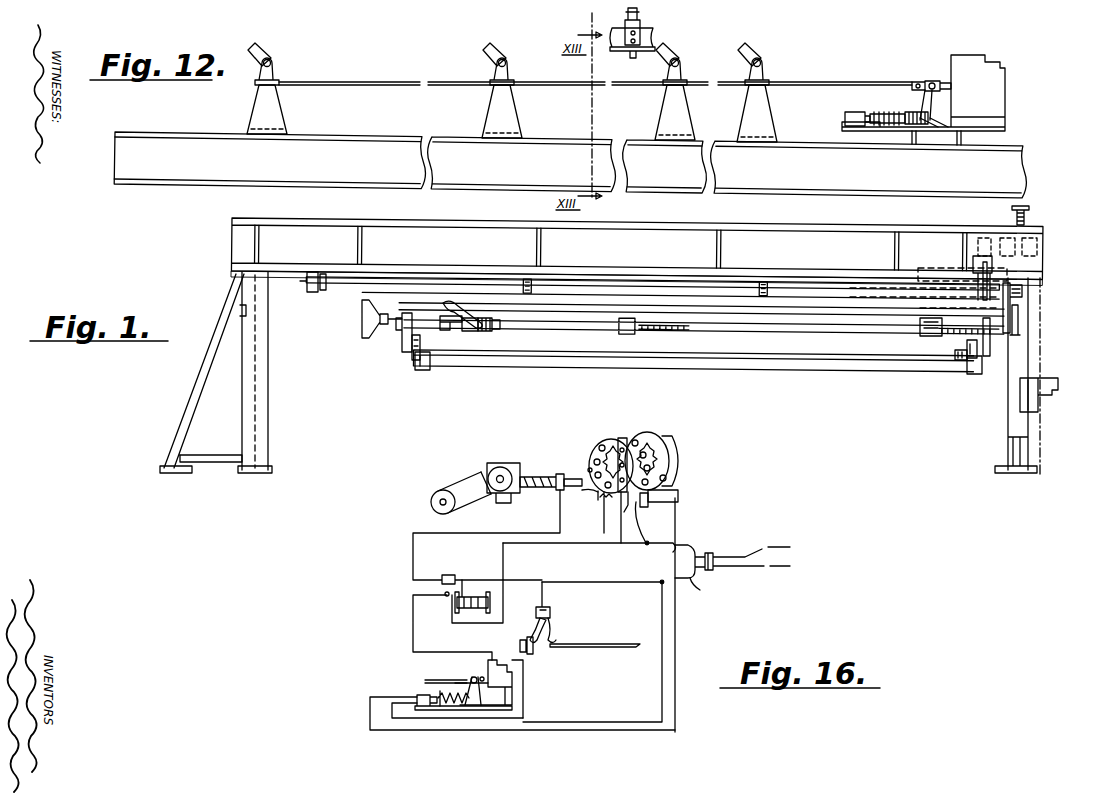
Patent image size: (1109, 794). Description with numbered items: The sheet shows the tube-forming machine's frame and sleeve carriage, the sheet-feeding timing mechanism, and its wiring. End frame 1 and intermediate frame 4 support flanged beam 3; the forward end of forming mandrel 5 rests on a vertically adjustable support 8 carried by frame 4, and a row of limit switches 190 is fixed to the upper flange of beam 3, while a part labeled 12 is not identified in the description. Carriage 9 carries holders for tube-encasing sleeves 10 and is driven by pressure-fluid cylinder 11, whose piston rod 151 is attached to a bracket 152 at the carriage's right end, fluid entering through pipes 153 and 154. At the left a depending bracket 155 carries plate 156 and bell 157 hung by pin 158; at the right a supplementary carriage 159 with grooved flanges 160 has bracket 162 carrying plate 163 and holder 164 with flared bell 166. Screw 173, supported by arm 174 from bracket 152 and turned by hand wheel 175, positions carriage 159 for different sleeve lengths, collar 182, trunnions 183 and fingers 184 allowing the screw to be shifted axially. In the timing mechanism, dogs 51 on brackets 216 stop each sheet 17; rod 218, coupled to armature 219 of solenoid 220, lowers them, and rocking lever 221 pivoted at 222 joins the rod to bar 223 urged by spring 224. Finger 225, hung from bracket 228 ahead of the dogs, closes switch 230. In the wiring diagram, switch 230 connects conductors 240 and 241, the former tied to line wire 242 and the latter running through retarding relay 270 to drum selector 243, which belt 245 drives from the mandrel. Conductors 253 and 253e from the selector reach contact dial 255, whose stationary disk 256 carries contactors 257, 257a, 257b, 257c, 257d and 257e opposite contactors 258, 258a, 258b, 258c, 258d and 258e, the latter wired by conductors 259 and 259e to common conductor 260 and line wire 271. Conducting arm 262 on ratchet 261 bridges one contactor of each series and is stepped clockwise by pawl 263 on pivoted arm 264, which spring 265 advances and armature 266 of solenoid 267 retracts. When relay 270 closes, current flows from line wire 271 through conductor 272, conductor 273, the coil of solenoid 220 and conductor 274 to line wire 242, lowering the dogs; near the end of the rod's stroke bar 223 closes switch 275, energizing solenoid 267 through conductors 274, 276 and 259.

In FIG. 1, the frame 1 is at (262, 378).
In FIG. 1, the flanged beam 3 is at (286, 234).
In FIG. 1, the frame 4 is at (1008, 423).
In FIG. 16, the forming mandrel 5 is at (432, 508).
In FIG. 1, the vertically adjustable support 8 is at (1049, 400).
In FIG. 1, the carriage 9 is at (510, 276).
In FIG. 1, the tube-encasing sleeve 10 is at (503, 362).
In FIG. 1, the hydraulic cylinder mechanism 11 is at (778, 280).
In FIG. 1, the adjusting screw 12 is at (1012, 212).
In FIG. 16, the sheet 17 is at (594, 645).
In FIG. 12, the dog 51 is at (260, 52).
In FIG. 16, the dog 51 is at (522, 650).
In FIG. 1, the piston rod 151 is at (875, 282).
In FIG. 1, the bracket 152 is at (1022, 296).
In FIG. 1, the pipe 153 is at (307, 284).
In FIG. 1, the pipe 154 is at (978, 264).
In FIG. 1, the depending bracket 155 is at (402, 332).
In FIG. 1, the plate 156 is at (412, 350).
In FIG. 1, the bell 157 is at (428, 368).
In FIG. 1, the pin 158 is at (450, 330).
In FIG. 1, the supplementary carriage 159 is at (924, 330).
In FIG. 1, the elongate flanges 160 is at (922, 308).
In FIG. 1, the depending bracket 162 is at (991, 347).
In FIG. 1, the plate 163 is at (967, 346).
In FIG. 1, the holder 164 is at (958, 360).
In FIG. 1, the bell 166 is at (975, 376).
In FIG. 1, the screw 173 is at (683, 328).
In FIG. 1, the arm 174 is at (1019, 320).
In FIG. 1, the hand wheel 175 is at (368, 325).
In FIG. 1, the collar 182 is at (470, 332).
In FIG. 1, the trunnions 183 is at (498, 331).
In FIG. 1, the fingers 184 is at (463, 306).
In FIG. 1, the electrical limit switches 190 is at (1038, 247).
In FIG. 12, the bracket 216 is at (262, 104).
In FIG. 12, the rod 218 is at (387, 82).
In FIG. 16, the rod 218 is at (448, 679).
In FIG. 12, the armature 219 is at (946, 81).
In FIG. 12, the solenoid 220 is at (957, 55).
In FIG. 16, the solenoid 220 is at (514, 680).
In FIG. 12, the rocking lever 221 is at (918, 103).
In FIG. 16, the rocking lever 221 is at (455, 682).
In FIG. 12, the pivot 222 is at (942, 130).
In FIG. 12, the bar 223 is at (922, 126).
In FIG. 16, the bar 223 is at (472, 707).
In FIG. 12, the spring 224 is at (892, 126).
In FIG. 16, the finger 225 is at (550, 636).
In FIG. 12, the bracket 228 is at (650, 35).
In FIG. 12, the switch 230 is at (640, 13).
In FIG. 16, the switch 230 is at (552, 612).
In FIG. 16, the conductor 240 is at (607, 573).
In FIG. 16, the conductor 241 is at (413, 556).
In FIG. 16, the supply line conductor 242 is at (701, 588).
In FIG. 16, the drum type selector 243 is at (515, 445).
In FIG. 16, the belt 245 is at (476, 478).
In FIG. 16, the conductor 253 is at (584, 493).
In FIG. 16, the conductor 253e is at (606, 482).
In FIG. 16, the contact dial 255 is at (626, 445).
In FIG. 16, the stationary disk 256 is at (616, 438).
In FIG. 16, the contactor 257 is at (600, 498).
In FIG. 16, the contactor 257a is at (568, 492).
In FIG. 16, the contactor 257b is at (560, 490).
In FIG. 16, the contactor 257c is at (588, 470).
In FIG. 16, the contactor 257d is at (596, 459).
In FIG. 16, the contactor 257e is at (601, 445).
In FIG. 16, the contactor 258 is at (646, 440).
In FIG. 16, the contactor 258a is at (638, 442).
In FIG. 16, the contactor 258b is at (646, 455).
In FIG. 16, the contactor 258c is at (648, 482).
In FIG. 16, the contactor 258d is at (666, 480).
In FIG. 16, the contactor 258e is at (651, 615).
In FIG. 16, the conductor 259 is at (658, 440).
In FIG. 16, the conductor 259e is at (650, 468).
In FIG. 16, the conductor 260 is at (664, 457).
In FIG. 16, the ratchet 261 is at (597, 472).
In FIG. 16, the electrically conducting arm 262 is at (627, 430).
In FIG. 16, the pawl 263 is at (665, 485).
In FIG. 16, the pivoted arm 264 is at (620, 508).
In FIG. 16, the spring 265 is at (605, 505).
In FIG. 16, the armature 266 is at (642, 512).
In FIG. 16, the solenoid 267 is at (676, 497).
In FIG. 16, the retarding relay 270 is at (474, 602).
In FIG. 16, the line wire 271 is at (708, 553).
In FIG. 16, the conductor 272 is at (504, 566).
In FIG. 16, the conductor 273 is at (413, 626).
In FIG. 16, the conductor 274 is at (577, 722).
In FIG. 12, the switch 275 is at (845, 120).
In FIG. 16, the switch 275 is at (424, 711).
In FIG. 16, the conductor 276 is at (603, 733).